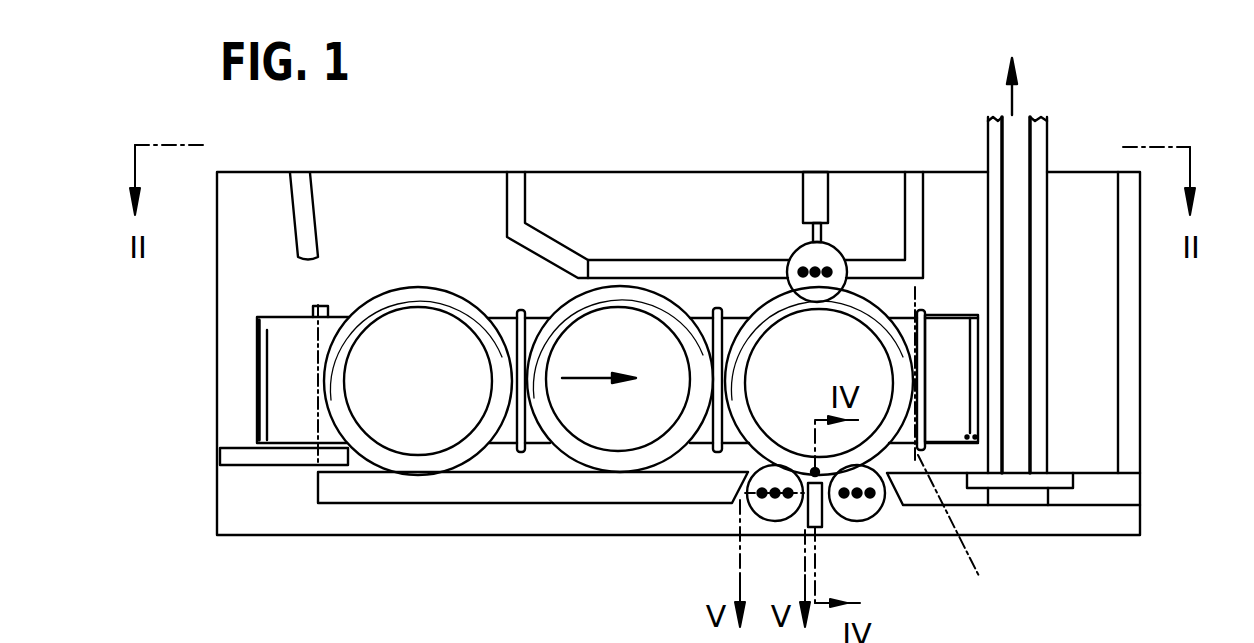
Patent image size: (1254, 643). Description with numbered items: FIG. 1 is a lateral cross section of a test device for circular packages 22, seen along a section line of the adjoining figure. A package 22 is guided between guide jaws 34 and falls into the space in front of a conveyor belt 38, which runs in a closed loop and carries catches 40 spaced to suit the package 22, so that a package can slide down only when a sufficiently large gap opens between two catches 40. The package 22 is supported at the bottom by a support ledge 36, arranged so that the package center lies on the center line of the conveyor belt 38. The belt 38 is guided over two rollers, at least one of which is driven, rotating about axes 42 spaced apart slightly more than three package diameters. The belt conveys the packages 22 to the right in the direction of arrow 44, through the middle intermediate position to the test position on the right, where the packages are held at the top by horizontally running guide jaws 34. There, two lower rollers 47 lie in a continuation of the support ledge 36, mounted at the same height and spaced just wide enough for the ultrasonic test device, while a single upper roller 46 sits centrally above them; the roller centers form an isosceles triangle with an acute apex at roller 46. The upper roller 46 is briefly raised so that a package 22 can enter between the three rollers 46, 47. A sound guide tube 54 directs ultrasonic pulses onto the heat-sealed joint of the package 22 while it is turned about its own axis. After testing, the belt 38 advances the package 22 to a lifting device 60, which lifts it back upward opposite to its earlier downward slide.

The package 22 is at (400, 317).
The guide jaws 34 is at (300, 185).
The support ledge 36 is at (447, 503).
The conveyor belt 38 is at (508, 428).
The catches 40 is at (518, 306).
The axes 42 is at (326, 408).
The arrow 44 is at (598, 368).
The upper roller 46 is at (805, 258).
The lower rollers 47 is at (772, 520).
The sound guide tube 54 is at (757, 458).
The lifting device 60 is at (1017, 245).